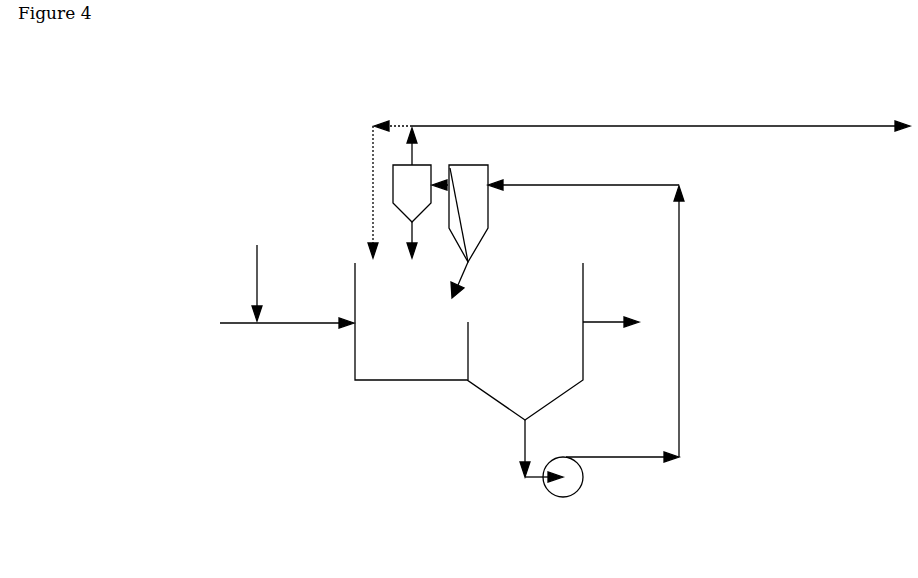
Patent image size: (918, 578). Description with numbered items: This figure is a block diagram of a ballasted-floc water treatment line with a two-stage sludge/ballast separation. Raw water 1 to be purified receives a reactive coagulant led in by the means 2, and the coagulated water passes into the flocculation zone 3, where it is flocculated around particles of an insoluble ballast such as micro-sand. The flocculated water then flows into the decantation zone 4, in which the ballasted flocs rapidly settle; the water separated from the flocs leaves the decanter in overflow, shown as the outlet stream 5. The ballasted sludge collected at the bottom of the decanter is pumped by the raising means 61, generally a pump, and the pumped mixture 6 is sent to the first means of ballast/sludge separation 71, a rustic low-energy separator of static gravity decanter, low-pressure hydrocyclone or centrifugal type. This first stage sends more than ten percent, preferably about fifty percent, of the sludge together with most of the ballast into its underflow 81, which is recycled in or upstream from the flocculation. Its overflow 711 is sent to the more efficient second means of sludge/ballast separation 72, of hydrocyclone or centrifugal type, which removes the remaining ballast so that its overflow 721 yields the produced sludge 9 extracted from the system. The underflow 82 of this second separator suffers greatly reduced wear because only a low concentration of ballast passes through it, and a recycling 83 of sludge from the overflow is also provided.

The raw water 1 is at (268, 350).
The means for leading reactive coagulant 2 is at (222, 272).
The flocculation zone 3 is at (469, 341).
The decantation zone 4 is at (505, 351).
The outlet stream 5 is at (621, 295).
The recycle line 6 is at (594, 321).
The produced sludge 9 is at (661, 99).
The raising means 61 is at (570, 488).
The first means of ballast/sludge separation 71 is at (496, 213).
The overflow of the first means of separation 711 is at (450, 186).
The second means of sludge/ballast separation 72 is at (393, 180).
The overflow of the second means of separation 721 is at (412, 163).
The underflow 81 is at (489, 282).
The underflow of the second means of separation 82 is at (405, 246).
The recycling of the sludge 83 is at (354, 189).